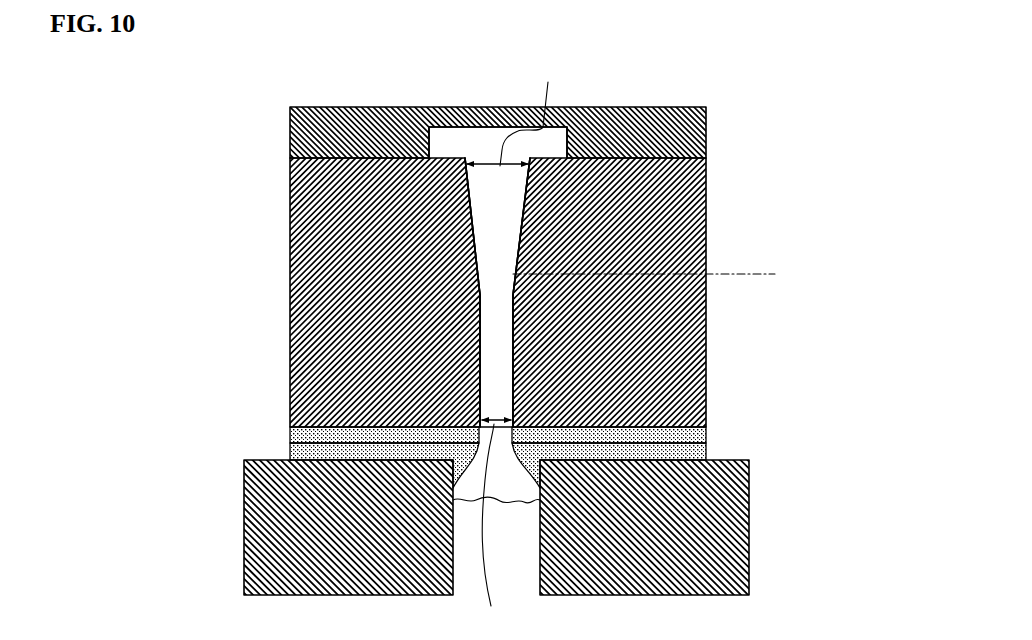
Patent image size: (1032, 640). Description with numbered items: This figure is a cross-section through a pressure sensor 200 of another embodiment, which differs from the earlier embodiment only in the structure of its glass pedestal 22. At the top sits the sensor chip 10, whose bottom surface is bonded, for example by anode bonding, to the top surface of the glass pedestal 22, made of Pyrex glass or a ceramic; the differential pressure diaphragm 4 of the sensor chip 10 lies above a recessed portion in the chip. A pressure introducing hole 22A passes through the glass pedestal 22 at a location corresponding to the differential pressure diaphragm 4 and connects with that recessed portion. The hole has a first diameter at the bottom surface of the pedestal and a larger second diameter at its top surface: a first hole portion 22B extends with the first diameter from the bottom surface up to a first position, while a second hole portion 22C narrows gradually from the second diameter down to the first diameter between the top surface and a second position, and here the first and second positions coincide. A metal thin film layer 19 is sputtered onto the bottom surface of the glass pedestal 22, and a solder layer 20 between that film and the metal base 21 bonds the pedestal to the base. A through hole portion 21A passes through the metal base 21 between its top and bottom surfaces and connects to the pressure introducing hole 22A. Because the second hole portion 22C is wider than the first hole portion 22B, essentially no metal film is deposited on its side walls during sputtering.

The pressure sensor 200 is at (835, 102).
The sensor chip 10 is at (706, 123).
The differential pressure diaphragm 4 is at (565, 98).
The glass pedestal 22 is at (706, 200).
The pressure introducing hole 22A is at (211, 190).
The first hole portion 22B is at (492, 320).
The second hole portion 22C is at (493, 260).
The metal thin film layer 19 is at (706, 432).
The solder layer 20 is at (706, 450).
The metal base 21 is at (749, 515).
The through hole portion 21A is at (515, 555).